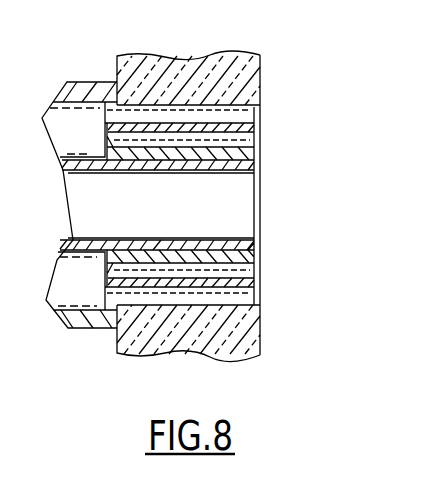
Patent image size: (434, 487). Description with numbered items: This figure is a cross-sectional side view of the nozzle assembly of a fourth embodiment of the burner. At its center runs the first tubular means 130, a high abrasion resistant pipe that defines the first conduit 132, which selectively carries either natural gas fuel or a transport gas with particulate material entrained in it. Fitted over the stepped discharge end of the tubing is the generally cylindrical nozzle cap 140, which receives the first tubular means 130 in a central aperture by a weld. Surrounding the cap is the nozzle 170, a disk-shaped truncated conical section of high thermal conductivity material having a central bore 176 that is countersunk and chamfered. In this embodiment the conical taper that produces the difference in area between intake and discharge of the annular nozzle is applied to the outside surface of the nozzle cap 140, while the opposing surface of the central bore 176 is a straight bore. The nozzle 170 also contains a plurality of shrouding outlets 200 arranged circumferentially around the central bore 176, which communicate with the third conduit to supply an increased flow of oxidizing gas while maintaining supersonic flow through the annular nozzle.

The nozzle 170 is at (272, 70).
The shrouding outlets 200 is at (260, 112).
The nozzle cap 140 is at (260, 157).
The first conduit 132 is at (257, 200).
The first tubular means 130 is at (254, 243).
The central bore 176 is at (256, 265).